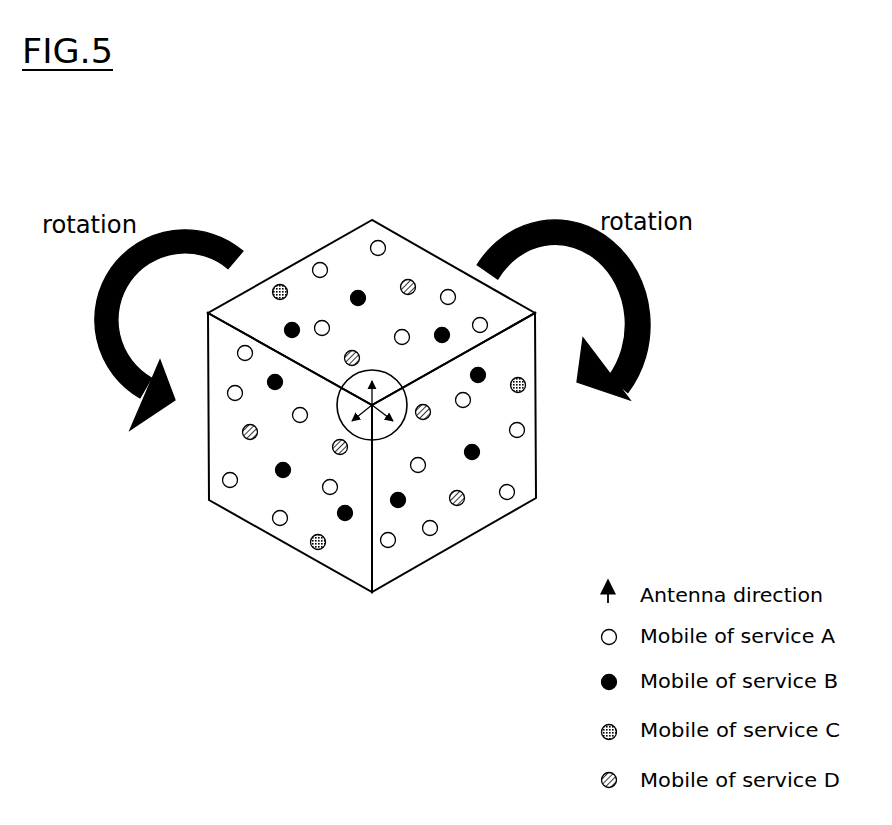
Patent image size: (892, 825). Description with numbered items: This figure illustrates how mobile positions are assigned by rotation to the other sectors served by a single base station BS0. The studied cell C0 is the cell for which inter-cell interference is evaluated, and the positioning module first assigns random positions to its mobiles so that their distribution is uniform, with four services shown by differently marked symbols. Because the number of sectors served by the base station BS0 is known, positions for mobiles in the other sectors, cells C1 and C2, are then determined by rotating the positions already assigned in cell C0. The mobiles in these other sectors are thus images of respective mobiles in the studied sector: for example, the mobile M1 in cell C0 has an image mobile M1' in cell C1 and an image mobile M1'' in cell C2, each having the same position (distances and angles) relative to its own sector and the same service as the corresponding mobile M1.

The studied cell C0 is at (343, 232).
The first other-sector cell C1 is at (473, 530).
The second other-sector cell C2 is at (235, 511).
The base station BS0 is at (418, 403).
The mobile in studied cell M1 is at (365, 351).
The image mobile in cell C1 M1' is at (442, 420).
The image mobile in cell C2 M1'' is at (350, 457).